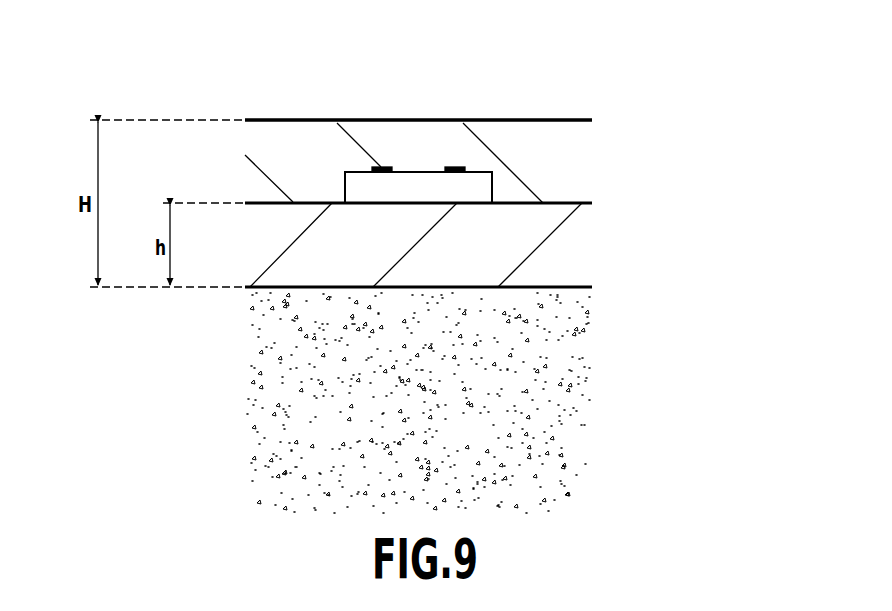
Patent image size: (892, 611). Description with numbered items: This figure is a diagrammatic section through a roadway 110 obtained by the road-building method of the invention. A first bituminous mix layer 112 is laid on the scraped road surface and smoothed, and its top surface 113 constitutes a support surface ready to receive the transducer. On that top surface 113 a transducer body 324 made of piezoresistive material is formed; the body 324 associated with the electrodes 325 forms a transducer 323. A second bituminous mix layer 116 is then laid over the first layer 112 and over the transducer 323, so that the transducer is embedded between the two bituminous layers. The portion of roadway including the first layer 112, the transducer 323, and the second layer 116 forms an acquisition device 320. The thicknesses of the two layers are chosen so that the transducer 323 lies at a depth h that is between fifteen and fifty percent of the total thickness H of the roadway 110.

The roadway 110 is at (302, 118).
The acquisition device 320 is at (513, 118).
The transducer 323 is at (352, 165).
The electrodes 325 is at (455, 166).
The transducer body 324 is at (383, 192).
The top surface 113 is at (269, 196).
The second bituminous mix layer 116 is at (570, 164).
The first bituminous mix layer 112 is at (570, 246).